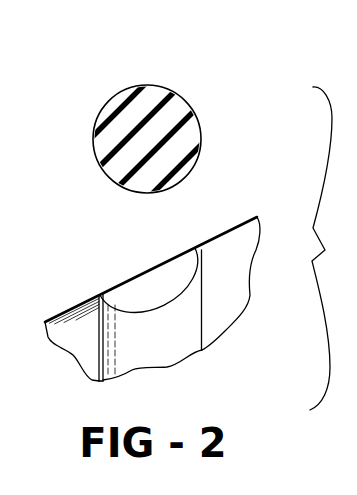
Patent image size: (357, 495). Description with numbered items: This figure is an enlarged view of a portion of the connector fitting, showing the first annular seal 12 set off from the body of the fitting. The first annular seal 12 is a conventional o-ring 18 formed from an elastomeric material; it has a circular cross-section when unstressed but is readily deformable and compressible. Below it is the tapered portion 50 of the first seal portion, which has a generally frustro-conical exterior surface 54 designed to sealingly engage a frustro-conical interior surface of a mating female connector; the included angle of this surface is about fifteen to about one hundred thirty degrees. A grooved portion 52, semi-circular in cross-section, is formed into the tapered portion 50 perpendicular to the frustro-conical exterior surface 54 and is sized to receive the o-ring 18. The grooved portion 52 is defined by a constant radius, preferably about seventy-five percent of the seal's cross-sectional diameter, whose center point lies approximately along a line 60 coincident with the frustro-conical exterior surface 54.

The first annular seal 12 is at (196, 102).
The o-ring 18 is at (181, 135).
The tapered portion 50 is at (231, 271).
The grooved portion 52 is at (165, 305).
The frustro-conical exterior surface 54 is at (213, 243).
The line 60 is at (148, 271).